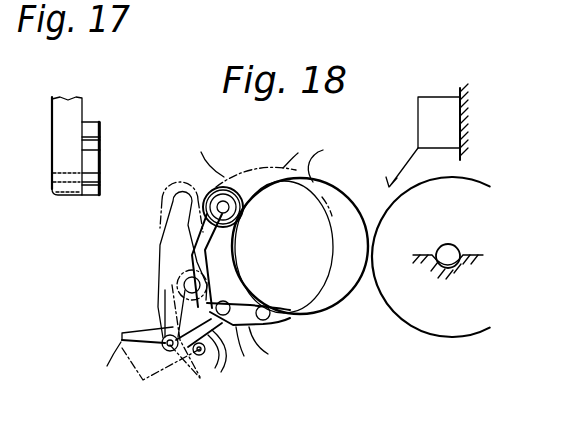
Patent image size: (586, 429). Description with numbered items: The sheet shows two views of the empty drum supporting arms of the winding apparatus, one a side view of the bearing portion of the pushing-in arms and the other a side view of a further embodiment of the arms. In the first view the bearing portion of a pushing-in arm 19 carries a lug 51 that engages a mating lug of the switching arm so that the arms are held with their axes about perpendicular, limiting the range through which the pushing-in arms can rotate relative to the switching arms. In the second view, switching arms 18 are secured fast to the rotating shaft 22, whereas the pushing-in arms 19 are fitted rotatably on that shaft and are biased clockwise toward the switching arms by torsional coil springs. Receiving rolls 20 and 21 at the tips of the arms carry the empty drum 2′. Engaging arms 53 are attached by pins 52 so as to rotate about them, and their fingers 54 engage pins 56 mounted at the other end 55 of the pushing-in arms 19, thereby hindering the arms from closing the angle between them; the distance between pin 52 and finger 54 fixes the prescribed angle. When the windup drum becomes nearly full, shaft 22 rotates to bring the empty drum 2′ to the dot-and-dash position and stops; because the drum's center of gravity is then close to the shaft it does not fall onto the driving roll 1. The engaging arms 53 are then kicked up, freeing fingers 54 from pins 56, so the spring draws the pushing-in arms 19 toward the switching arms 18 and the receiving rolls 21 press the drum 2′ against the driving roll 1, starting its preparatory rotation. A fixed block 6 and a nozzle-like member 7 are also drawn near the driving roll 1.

In FIG. 18, the driving roll 1 is at (428, 335).
In FIG. 18, the empty drum 2′ is at (292, 227).
In FIG. 18, the fixed support block 6 is at (430, 97).
In FIG. 18, the nozzle 7 is at (404, 166).
In FIG. 18, the drum switching arms 18 is at (265, 350).
In FIG. 17, the drum pushing-in arms 19 is at (77, 112).
In FIG. 18, the drum pushing-in arms 19 is at (222, 224).
In FIG. 18, the receiving rolls 20 is at (276, 322).
In FIG. 18, the receiving rolls 21 is at (212, 188).
In FIG. 18, the rotating shaft 22 is at (184, 287).
In FIG. 17, the lug 51 is at (90, 190).
In FIG. 18, the pins 52 is at (233, 356).
In FIG. 18, the engaging arms 53 is at (143, 380).
In FIG. 18, the fingers 54 is at (201, 358).
In FIG. 18, the other end of pushing-in arms 55 is at (153, 332).
In FIG. 18, the pins 56 is at (165, 372).